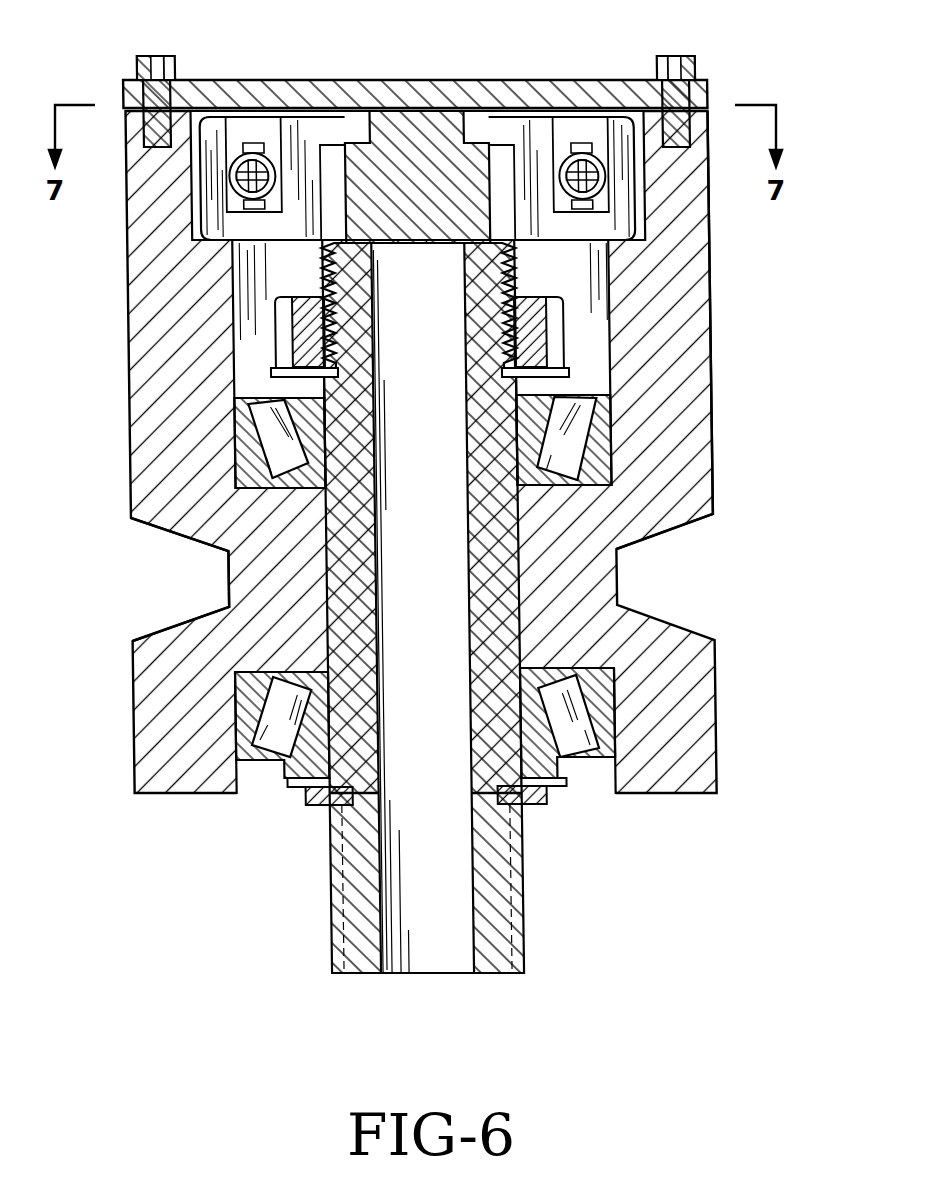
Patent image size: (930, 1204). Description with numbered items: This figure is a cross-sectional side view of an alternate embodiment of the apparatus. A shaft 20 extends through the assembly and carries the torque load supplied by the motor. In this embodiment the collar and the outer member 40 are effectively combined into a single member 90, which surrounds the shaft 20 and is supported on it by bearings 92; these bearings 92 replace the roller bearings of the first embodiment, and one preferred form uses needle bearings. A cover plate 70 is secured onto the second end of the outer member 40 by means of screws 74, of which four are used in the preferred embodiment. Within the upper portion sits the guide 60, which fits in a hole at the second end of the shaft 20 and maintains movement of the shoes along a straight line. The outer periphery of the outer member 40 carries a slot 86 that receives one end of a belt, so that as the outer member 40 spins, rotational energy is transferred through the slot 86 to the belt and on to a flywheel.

The shaft 20 is at (492, 933).
The outer member 40 is at (155, 393).
The guide 60 is at (418, 128).
The cover plate 70 is at (482, 80).
The screws 74 is at (686, 57).
The slot 86 is at (228, 578).
The single member 90 is at (672, 362).
The bearings 92 is at (563, 447).